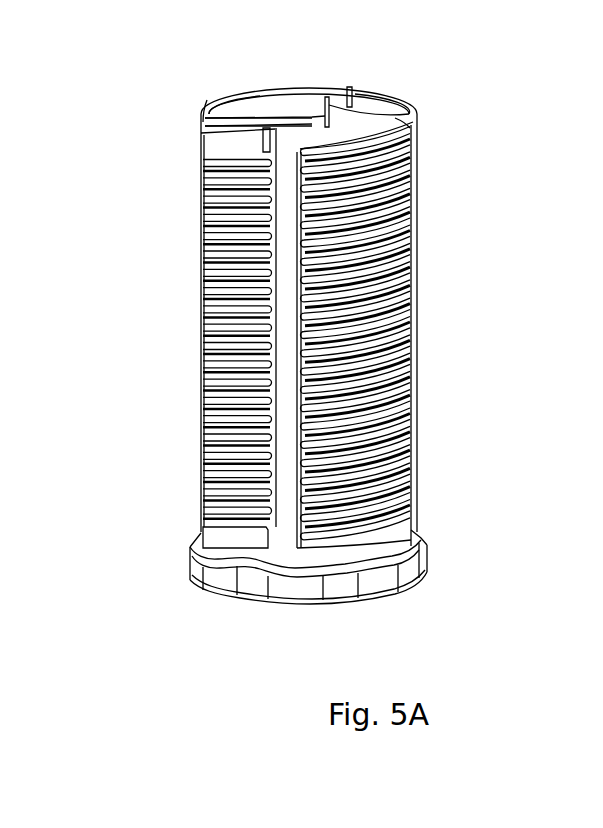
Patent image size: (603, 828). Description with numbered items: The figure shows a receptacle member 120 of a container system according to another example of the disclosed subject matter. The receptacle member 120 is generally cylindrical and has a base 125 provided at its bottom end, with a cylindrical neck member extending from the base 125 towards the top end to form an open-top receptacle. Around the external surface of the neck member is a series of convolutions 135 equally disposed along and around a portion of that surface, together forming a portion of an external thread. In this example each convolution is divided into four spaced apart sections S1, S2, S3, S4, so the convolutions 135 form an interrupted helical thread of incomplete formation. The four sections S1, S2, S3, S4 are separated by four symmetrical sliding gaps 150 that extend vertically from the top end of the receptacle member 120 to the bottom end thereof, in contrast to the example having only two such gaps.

The receptacle member 120 is at (450, 289).
The base 125 is at (442, 557).
The convolutions 135 is at (278, 175).
The sliding gaps 150 is at (325, 90).
The convolution section S1 is at (402, 118).
The convolution section S2 is at (227, 160).
The convolution section S3 is at (262, 160).
The convolution section S4 is at (380, 112).